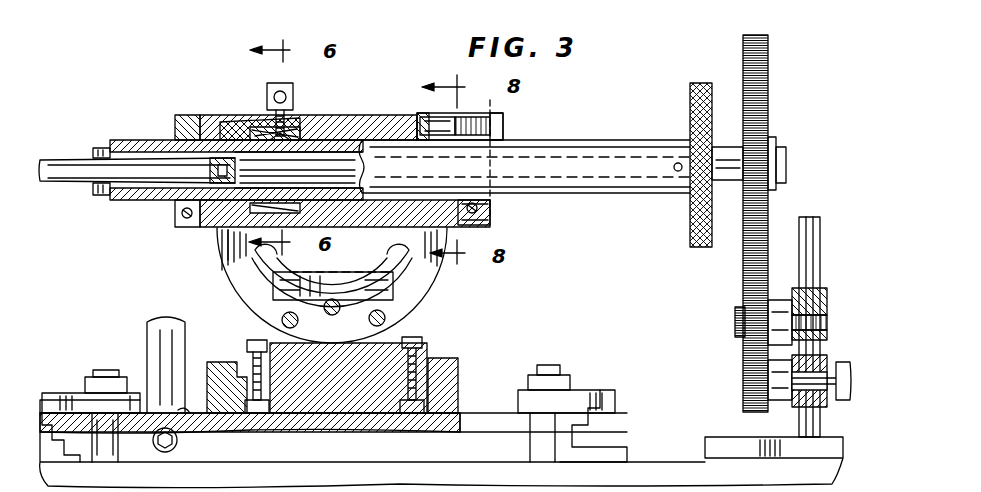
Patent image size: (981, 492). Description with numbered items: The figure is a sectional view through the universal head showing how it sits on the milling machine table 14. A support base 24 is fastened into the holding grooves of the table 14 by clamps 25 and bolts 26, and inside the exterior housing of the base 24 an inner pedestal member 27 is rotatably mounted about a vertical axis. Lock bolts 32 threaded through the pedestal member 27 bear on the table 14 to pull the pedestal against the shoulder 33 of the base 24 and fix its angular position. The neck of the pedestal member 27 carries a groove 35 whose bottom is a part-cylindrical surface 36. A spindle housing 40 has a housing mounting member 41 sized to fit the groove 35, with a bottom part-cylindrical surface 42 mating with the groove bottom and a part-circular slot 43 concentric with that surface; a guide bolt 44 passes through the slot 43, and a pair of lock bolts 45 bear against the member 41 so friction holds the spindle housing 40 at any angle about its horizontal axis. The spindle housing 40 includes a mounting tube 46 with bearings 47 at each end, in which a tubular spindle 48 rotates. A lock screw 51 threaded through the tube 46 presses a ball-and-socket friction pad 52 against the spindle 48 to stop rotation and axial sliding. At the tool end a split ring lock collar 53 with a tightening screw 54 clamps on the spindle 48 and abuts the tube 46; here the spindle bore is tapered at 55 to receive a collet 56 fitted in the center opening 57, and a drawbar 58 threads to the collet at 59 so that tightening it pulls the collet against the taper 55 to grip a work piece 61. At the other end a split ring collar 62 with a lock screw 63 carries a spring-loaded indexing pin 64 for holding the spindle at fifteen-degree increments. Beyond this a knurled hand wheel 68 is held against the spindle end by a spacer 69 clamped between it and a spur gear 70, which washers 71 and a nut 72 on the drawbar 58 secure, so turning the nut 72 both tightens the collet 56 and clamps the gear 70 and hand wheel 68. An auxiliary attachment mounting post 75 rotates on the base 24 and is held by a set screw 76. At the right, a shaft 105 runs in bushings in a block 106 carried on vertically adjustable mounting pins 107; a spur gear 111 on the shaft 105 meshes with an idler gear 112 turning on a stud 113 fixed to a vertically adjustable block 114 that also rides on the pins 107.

The table 14 is at (705, 456).
The support base 24 is at (455, 378).
The clamps 25 is at (62, 398).
The bolts 26 is at (108, 374).
The inner pedestal member 27 is at (400, 344).
The lock bolts 32 is at (248, 346).
The shoulder 33 is at (430, 360).
The groove 35 is at (278, 284).
The part cylindrical bottom surface 36 is at (336, 332).
The spindle housing 40 is at (372, 115).
The housing mounting member 41 is at (228, 246).
The bottom part-cylindrical surface 42 is at (228, 292).
The part-circular slot 43 is at (398, 258).
The guide bolt 44 is at (343, 276).
The lock bolts 45 is at (282, 320).
The mounting tube 46 is at (398, 127).
The bearings 47 is at (232, 122).
The tubular spindle 48 is at (612, 141).
The lock screw 51 is at (294, 95).
The friction pad 52 is at (276, 118).
The split ring lock collar 53 is at (182, 120).
The tightening screw 54 is at (176, 214).
The tapered inner surface 55 is at (115, 141).
The collet 56 is at (94, 190).
The center opening 57 is at (385, 180).
The drawbar 58 is at (400, 162).
The threaded mounting 59 is at (222, 172).
The work piece 61 is at (62, 158).
The split ring collar 62 is at (450, 118).
The lock screw 63 is at (474, 214).
The indexing pin 64 is at (497, 128).
The knurled hand wheel 68 is at (692, 100).
The spacer 69 is at (727, 148).
The spur gear 70 is at (769, 52).
The washers 71 is at (773, 140).
The nut 72 is at (787, 165).
The auxiliary attachment mounting post 75 is at (185, 410).
The set screw 76 is at (165, 452).
The shaft 105 is at (805, 398).
The block 106 is at (772, 380).
The mounting pins 107 is at (820, 225).
The spur gear 111 is at (832, 382).
The idler gear 112 is at (772, 320).
The bolt or stud 113 is at (737, 318).
The vertically adjustable block 114 is at (800, 290).